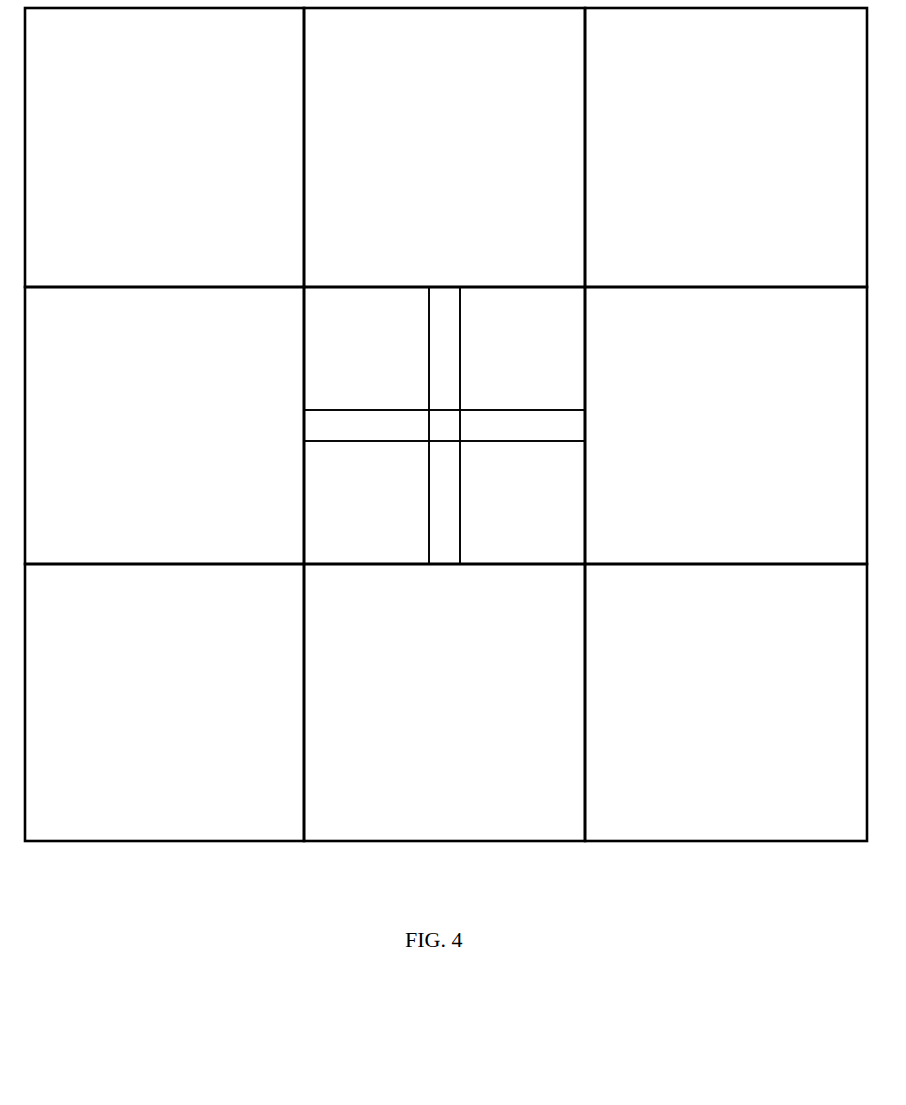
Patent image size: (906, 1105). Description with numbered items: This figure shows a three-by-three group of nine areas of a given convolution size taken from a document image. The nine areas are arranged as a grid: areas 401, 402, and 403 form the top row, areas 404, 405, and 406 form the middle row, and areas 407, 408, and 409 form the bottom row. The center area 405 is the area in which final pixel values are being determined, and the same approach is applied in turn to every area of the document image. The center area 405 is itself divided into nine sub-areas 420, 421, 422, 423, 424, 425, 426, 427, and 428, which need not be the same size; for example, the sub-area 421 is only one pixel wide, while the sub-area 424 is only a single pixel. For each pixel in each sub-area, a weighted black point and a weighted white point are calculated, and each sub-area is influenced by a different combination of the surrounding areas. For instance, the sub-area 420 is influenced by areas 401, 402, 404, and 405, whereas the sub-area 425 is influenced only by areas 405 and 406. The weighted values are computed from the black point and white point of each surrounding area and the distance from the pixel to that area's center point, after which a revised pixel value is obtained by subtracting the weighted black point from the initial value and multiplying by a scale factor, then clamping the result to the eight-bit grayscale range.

The area 401 is at (184, 156).
The area 402 is at (466, 156).
The area 403 is at (747, 156).
The area 404 is at (184, 436).
The center area 405 is at (587, 306).
The area 406 is at (749, 436).
The area 407 is at (184, 714).
The area 408 is at (466, 714).
The area 409 is at (748, 714).
The sub-area 420 is at (373, 324).
The sub-area 421 is at (443, 285).
The sub-area 422 is at (569, 324).
The sub-area 423 is at (360, 441).
The sub-area 424 is at (442, 410).
The sub-area 425 is at (532, 441).
The sub-area 426 is at (379, 551).
The sub-area 427 is at (462, 510).
The sub-area 428 is at (574, 551).